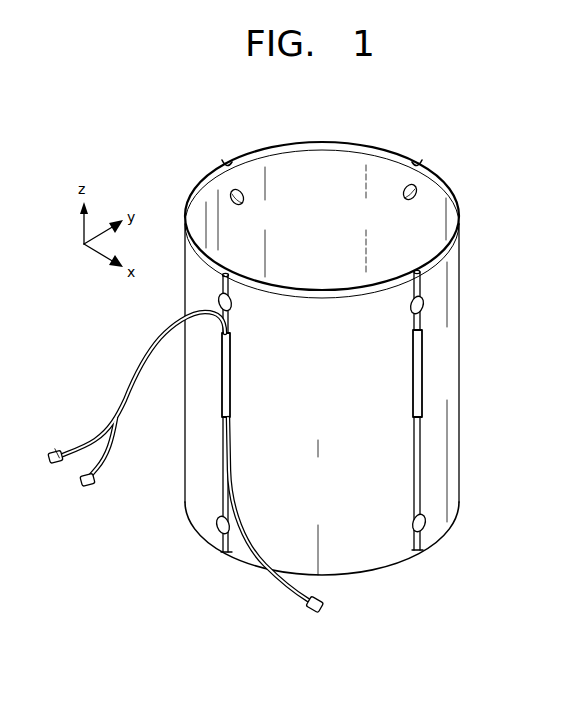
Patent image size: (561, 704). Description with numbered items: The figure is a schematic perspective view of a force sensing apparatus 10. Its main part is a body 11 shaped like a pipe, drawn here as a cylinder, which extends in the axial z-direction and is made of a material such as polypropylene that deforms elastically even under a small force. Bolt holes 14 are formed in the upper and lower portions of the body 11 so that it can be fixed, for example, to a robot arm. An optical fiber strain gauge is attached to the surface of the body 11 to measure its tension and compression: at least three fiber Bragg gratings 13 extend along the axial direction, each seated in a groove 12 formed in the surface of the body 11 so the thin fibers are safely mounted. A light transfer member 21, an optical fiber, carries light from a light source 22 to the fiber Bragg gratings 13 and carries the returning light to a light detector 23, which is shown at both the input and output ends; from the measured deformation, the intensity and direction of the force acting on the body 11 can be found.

The force sensing apparatus 10 is at (267, 383).
The body 11 is at (452, 425).
The groove 12 is at (421, 284).
The fiber Bragg grating 13 is at (222, 397).
The bolt hole 14 is at (422, 304).
The light transfer member 21 is at (137, 362).
The light source 22 is at (50, 452).
The light detector 23 is at (92, 486).